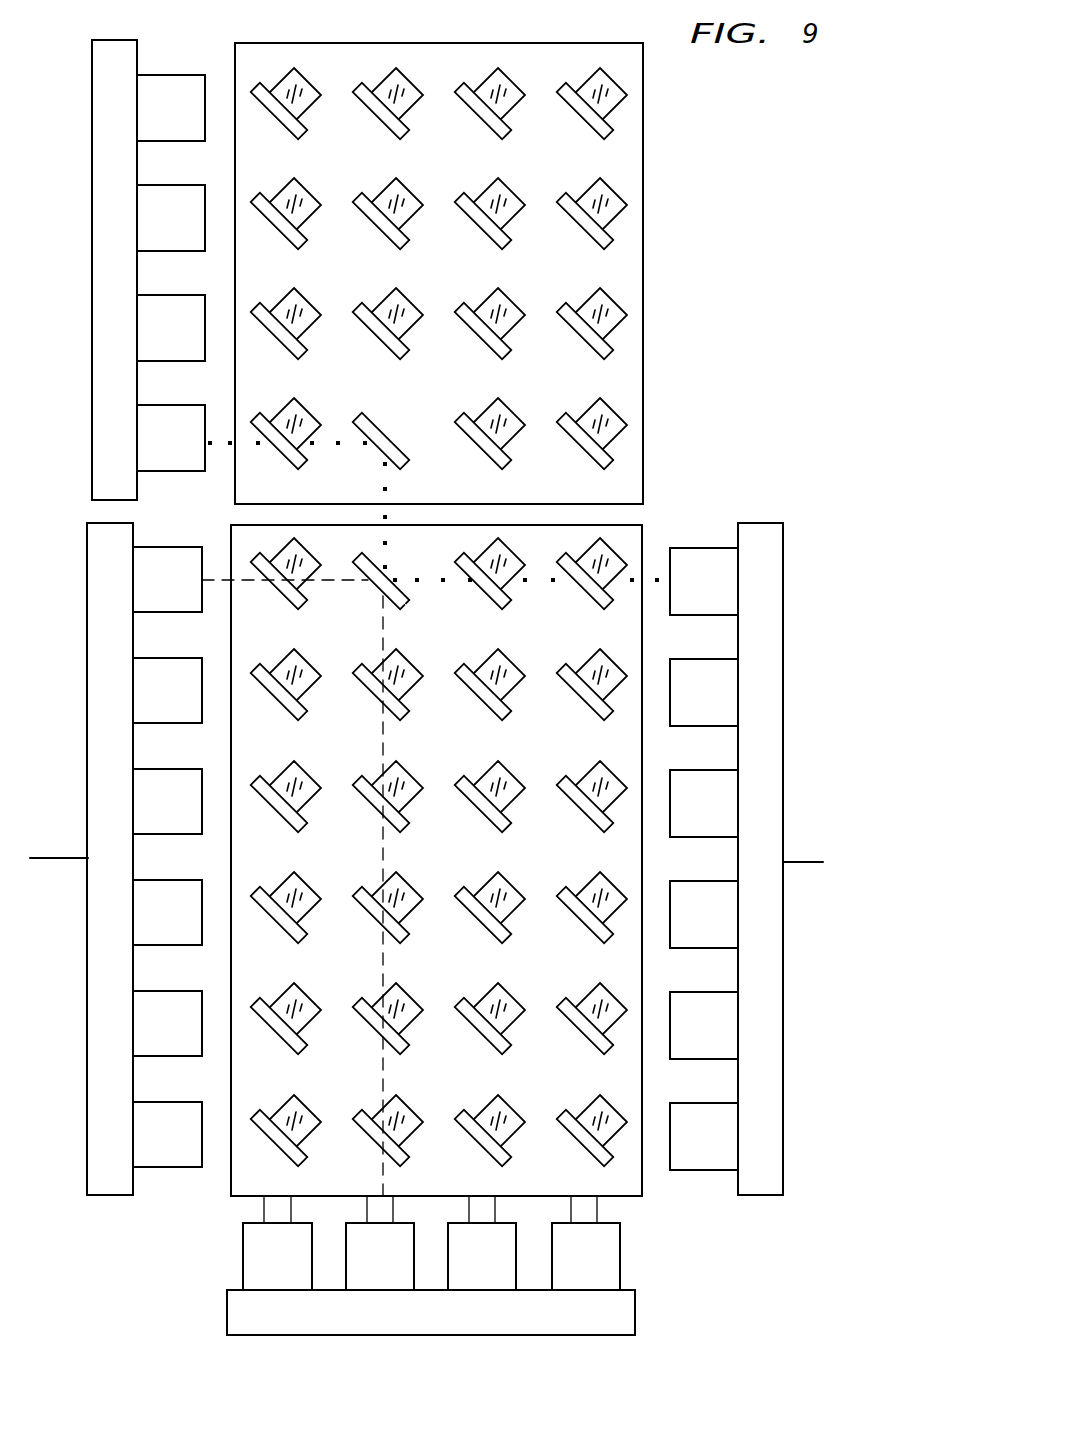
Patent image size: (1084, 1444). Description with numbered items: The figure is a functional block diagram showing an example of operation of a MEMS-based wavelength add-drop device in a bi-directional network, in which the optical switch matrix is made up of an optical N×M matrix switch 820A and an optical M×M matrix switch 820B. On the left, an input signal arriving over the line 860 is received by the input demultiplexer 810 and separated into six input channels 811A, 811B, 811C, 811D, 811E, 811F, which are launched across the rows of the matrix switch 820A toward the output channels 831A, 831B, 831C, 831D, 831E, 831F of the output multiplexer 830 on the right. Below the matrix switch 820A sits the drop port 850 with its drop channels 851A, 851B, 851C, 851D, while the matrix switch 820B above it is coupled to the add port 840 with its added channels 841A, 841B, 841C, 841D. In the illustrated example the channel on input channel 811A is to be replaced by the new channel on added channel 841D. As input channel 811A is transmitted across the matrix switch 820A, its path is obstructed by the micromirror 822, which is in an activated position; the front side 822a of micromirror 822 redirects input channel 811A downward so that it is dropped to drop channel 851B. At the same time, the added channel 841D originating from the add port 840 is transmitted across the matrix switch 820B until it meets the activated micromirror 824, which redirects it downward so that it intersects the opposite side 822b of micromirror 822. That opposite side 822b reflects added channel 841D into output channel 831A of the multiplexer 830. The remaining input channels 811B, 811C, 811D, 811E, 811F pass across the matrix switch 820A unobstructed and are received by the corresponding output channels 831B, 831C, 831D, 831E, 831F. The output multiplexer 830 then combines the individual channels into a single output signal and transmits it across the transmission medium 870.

The input demultiplexer 810 is at (98, 1193).
The input channel 811A is at (192, 593).
The input channel 811B is at (192, 704).
The input channel 811C is at (192, 815).
The input channel 811D is at (192, 926).
The input channel 811E is at (192, 1037).
The input channel 811F is at (192, 1148).
The optical N×M matrix switch 820A is at (408, 873).
The optical M×M matrix switch 820B is at (462, 281).
The micromirror 822 is at (382, 591).
The front side of micromirror 822a is at (370, 583).
The opposite side of micromirror 822b is at (390, 573).
The micromirror 824 is at (387, 440).
The output multiplexer 830 is at (750, 1196).
The output channel 831A is at (729, 595).
The output channel 831B is at (729, 706).
The output channel 831C is at (729, 817).
The output channel 831D is at (729, 928).
The output channel 831E is at (729, 1039).
The output channel 831F is at (729, 1150).
The add port 840 is at (92, 437).
The added channel 841A is at (196, 119).
The added channel 841B is at (196, 229).
The added channel 841C is at (196, 339).
The added channel 841D is at (196, 449).
The drop port 850 is at (637, 1306).
The drop channel 851A is at (302, 1269).
The drop channel 851B is at (405, 1269).
The drop channel 851C is at (507, 1269).
The drop channel 851D is at (611, 1269).
The input optical fiber 860 is at (43, 861).
The transmission medium 870 is at (802, 865).